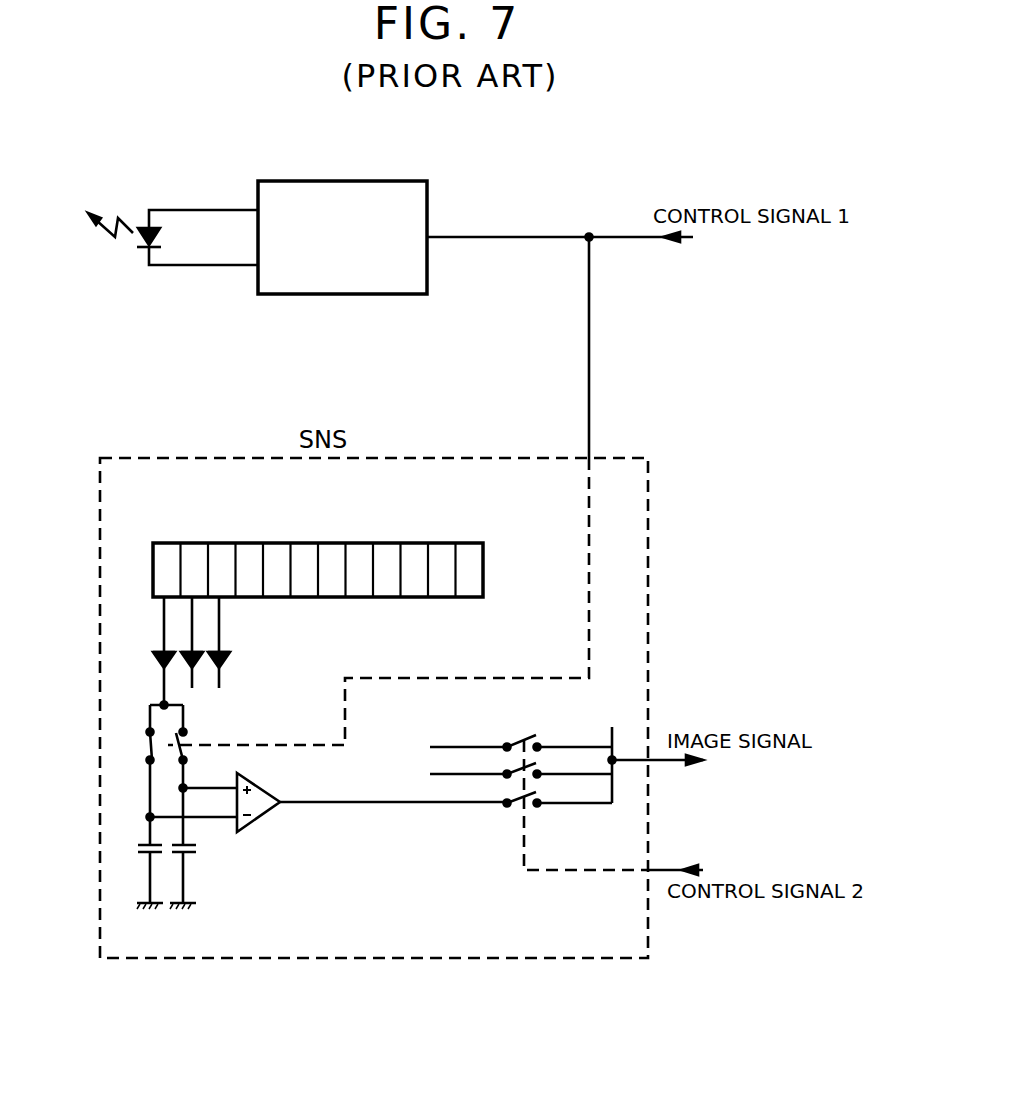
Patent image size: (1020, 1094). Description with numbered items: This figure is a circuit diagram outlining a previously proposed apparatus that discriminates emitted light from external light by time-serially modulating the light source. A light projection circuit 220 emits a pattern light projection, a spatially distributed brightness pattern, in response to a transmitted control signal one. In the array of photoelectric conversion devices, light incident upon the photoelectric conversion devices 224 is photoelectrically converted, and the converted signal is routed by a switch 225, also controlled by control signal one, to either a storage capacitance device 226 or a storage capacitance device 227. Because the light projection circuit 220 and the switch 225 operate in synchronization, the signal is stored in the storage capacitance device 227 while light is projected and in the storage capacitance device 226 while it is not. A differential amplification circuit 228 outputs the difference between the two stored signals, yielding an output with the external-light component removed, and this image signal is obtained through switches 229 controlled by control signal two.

The light projection circuit 220 is at (327, 178).
The photoelectric conversion devices 224 is at (306, 609).
The switch 225 is at (143, 747).
The storage capacitance device 226 is at (143, 856).
The storage capacitance device 227 is at (201, 848).
The differential amplification circuit 228 is at (372, 810).
The switches 229 is at (566, 783).